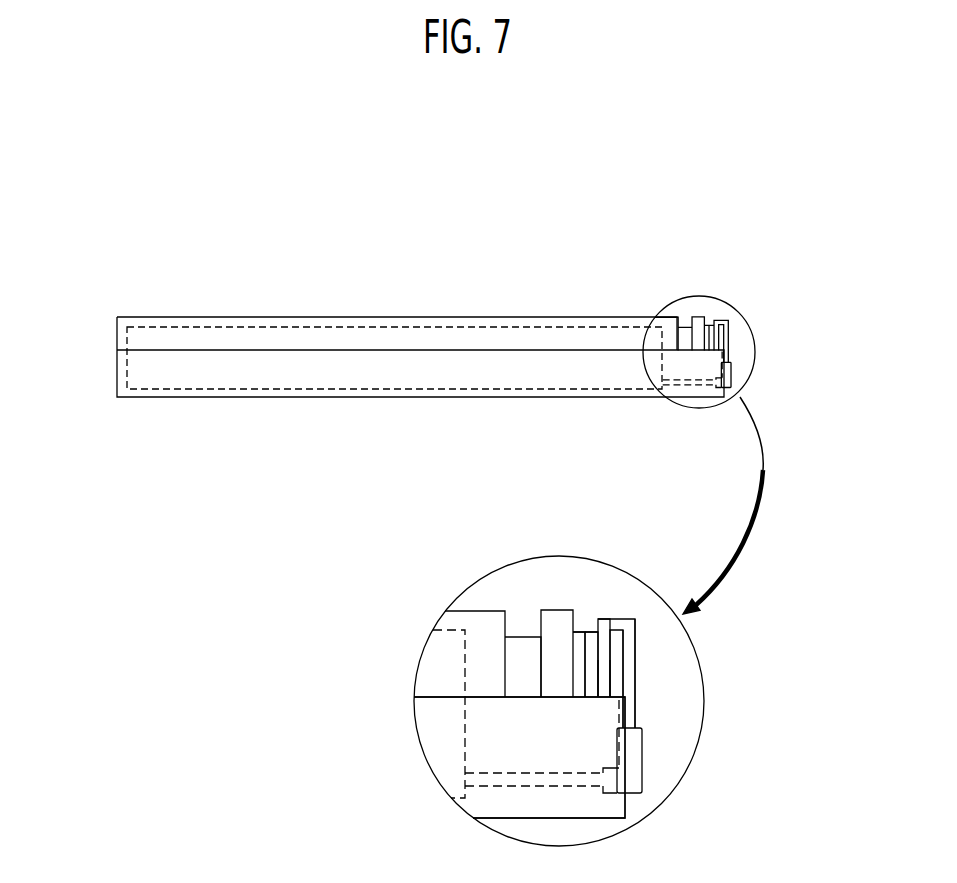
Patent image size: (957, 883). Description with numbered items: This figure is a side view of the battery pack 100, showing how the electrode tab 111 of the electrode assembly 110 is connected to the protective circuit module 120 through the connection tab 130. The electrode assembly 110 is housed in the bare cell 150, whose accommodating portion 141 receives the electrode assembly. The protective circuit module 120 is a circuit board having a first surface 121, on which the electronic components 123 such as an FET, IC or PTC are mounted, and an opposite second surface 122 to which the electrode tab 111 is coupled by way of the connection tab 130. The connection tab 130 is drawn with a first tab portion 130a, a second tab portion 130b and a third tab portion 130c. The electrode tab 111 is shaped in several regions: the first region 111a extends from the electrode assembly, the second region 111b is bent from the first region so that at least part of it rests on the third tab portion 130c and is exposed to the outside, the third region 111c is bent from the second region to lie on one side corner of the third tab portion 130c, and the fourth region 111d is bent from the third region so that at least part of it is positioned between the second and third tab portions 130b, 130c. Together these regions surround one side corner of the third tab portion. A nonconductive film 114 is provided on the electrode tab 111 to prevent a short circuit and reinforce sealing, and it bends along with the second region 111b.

The battery pack 100 is at (162, 172).
The electrode assembly 110 is at (403, 337).
The electrode tab 111 is at (731, 340).
The first region 111a is at (562, 780).
The second region 111b is at (621, 656).
The third region 111c is at (603, 627).
The fourth region 111d is at (605, 675).
The film 114 is at (731, 374).
The protective circuit module 120 is at (690, 316).
The first surface 121 is at (530, 617).
The second surface 122 is at (580, 632).
The electronic components 123 is at (517, 668).
The connection tab 130 is at (717, 320).
The first tab portion 130a is at (588, 632).
The second tab portion 130b is at (603, 628).
The third tab portion 130c is at (630, 640).
The accommodating portion 141 is at (675, 340).
The bare cell 150 is at (114, 387).